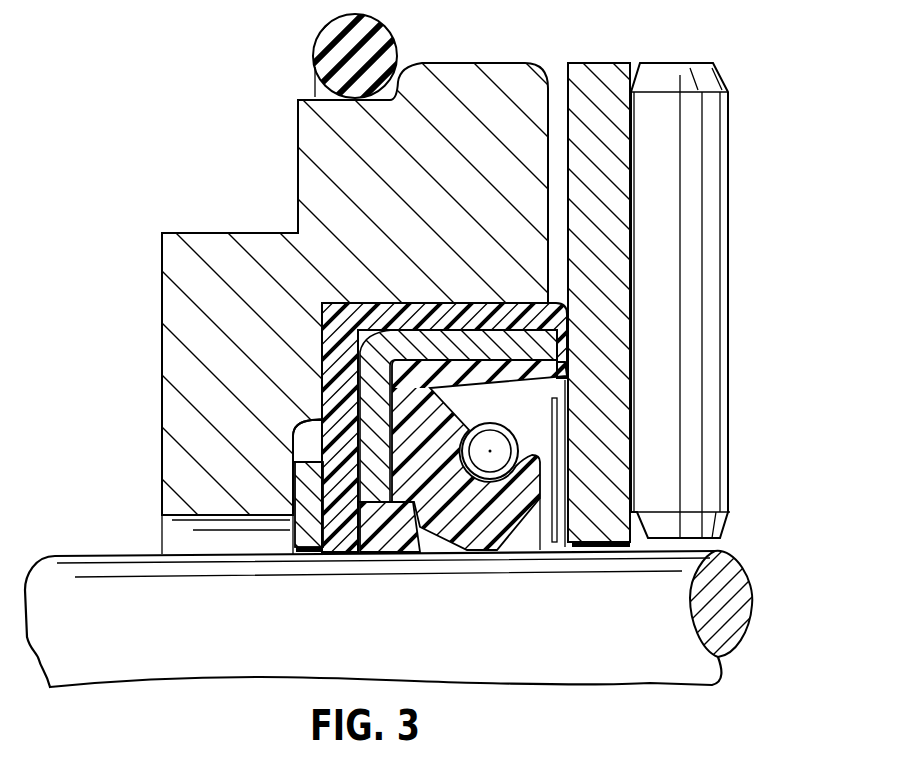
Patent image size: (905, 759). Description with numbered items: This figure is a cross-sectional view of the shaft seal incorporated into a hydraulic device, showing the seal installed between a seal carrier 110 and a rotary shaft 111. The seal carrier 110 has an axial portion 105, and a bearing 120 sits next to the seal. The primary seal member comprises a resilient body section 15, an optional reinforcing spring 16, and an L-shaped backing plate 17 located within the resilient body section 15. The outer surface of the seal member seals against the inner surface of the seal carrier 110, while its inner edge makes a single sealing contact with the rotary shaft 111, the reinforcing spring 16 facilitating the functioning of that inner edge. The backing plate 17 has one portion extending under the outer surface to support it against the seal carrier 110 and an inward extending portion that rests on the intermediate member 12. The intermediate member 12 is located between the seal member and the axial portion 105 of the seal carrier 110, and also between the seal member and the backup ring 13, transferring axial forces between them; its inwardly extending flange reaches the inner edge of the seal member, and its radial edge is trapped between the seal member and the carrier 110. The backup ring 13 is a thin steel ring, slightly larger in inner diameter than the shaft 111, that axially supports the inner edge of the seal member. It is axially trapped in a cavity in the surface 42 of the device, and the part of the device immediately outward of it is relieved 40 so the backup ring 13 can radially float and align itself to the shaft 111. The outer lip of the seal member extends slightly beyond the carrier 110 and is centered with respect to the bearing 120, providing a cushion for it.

The intermediate member 12 is at (332, 338).
The backup ring 13 is at (300, 484).
The resilient body section 15 is at (425, 436).
The reinforcing spring 16 is at (493, 423).
The backing plate 17 is at (433, 338).
The relieved section 40 is at (305, 440).
The surface of the device 42 is at (321, 394).
The axial portion of the seal carrier 105 is at (158, 360).
The seal carrier 110 is at (306, 151).
The rotary shaft 111 is at (100, 577).
The bearing 120 is at (707, 240).